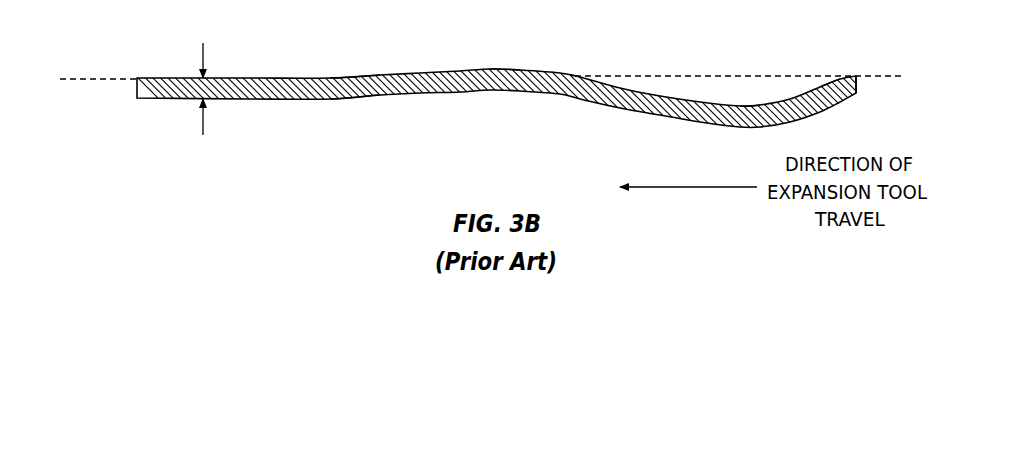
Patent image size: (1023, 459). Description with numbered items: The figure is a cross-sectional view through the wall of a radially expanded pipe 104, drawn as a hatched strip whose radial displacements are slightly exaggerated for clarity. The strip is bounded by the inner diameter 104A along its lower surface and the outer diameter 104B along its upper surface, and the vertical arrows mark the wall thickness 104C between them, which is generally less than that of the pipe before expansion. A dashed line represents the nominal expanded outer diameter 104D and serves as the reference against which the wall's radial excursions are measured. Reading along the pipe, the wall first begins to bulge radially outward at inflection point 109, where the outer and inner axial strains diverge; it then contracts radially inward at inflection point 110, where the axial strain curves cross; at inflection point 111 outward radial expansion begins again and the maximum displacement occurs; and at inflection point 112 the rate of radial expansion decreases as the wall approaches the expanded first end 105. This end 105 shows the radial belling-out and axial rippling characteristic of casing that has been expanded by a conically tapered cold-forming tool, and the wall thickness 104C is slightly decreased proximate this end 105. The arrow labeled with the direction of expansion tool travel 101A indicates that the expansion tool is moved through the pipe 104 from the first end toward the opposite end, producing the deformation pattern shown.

The expanded pipe 104 is at (289, 100).
The inner diameter 104A is at (380, 100).
The outer diameter 104B is at (383, 77).
The wall thickness 104C is at (202, 76).
The nominal expanded outer diameter 104D is at (93, 78).
The inflection point 109 is at (500, 68).
The inflection point 110 is at (578, 77).
The inflection point 111 is at (752, 106).
The inflection point 112 is at (828, 79).
The expanded first end 105 is at (858, 87).
The direction of expansion tool travel 101A is at (703, 188).